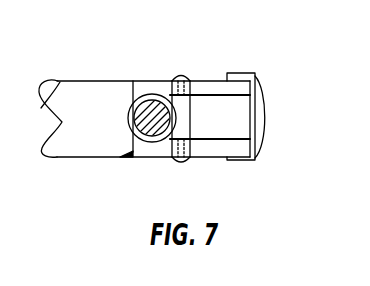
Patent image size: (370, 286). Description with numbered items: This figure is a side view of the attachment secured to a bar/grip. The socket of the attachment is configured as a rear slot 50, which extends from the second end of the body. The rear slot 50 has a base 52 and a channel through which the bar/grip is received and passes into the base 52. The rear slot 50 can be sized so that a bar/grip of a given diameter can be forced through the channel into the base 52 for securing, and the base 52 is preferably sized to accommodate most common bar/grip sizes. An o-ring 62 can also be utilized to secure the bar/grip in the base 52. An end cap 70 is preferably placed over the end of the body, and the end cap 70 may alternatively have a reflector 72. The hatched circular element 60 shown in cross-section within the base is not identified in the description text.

The rear slot 50 is at (197, 93).
The base 52 is at (136, 95).
The pin 60 is at (153, 98).
The o-ring 62 is at (127, 154).
The end cap 70 is at (243, 160).
The reflector 72 is at (266, 121).